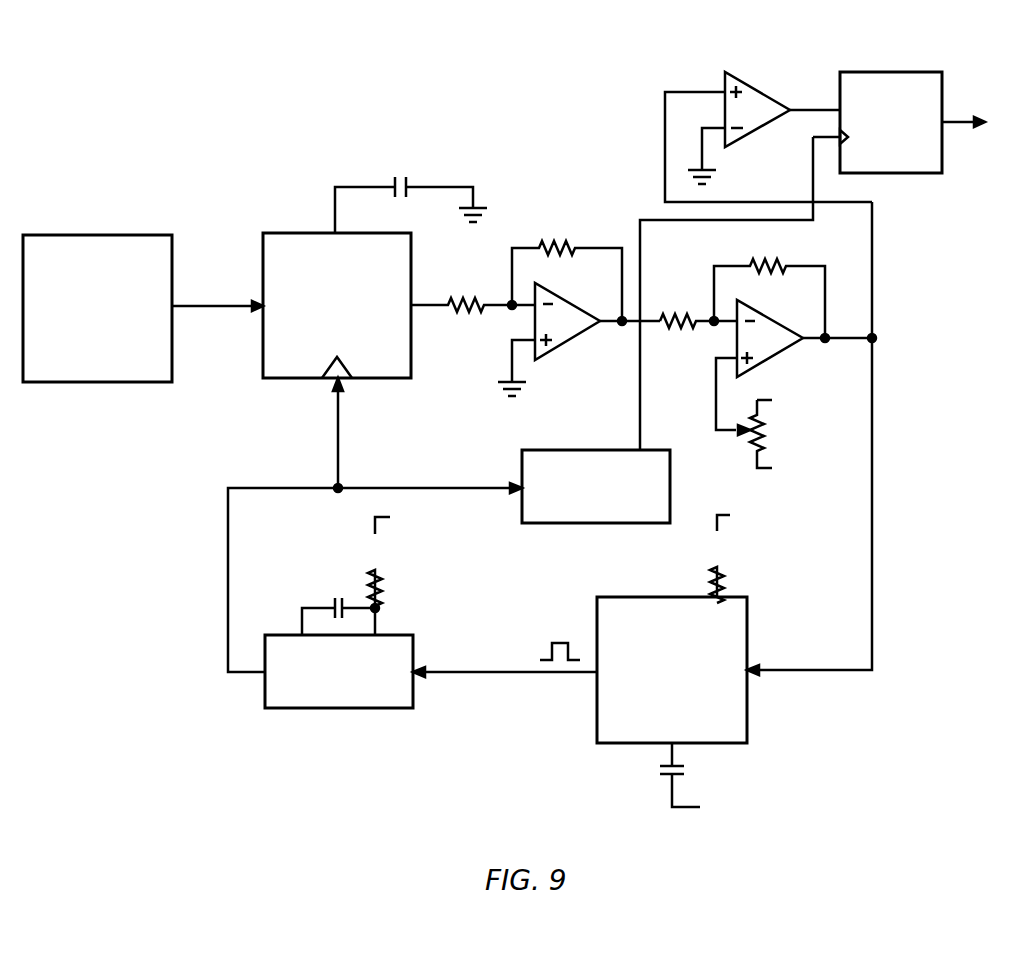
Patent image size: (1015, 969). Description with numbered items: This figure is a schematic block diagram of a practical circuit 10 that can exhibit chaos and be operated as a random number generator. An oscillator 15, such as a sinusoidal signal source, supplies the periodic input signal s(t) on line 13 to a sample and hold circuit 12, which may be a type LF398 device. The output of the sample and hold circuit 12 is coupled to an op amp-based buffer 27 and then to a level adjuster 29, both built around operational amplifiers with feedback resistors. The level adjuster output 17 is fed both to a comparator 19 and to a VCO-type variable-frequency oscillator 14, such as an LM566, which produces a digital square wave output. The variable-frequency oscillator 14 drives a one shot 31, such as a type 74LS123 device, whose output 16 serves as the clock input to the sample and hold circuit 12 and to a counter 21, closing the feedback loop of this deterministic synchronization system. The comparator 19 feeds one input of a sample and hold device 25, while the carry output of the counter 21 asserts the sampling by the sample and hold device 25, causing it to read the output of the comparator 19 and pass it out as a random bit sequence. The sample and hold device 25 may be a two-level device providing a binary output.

The random number generator 10 is at (510, 108).
The sample and hold circuit 12 is at (299, 230).
The input signal line 13 is at (223, 309).
The variable-frequency oscillator 14 is at (614, 592).
The oscillator 15 is at (131, 230).
The one shot output 16 is at (228, 530).
The level adjuster output 17 is at (840, 335).
The comparator 19 is at (755, 86).
The counter 21 is at (597, 450).
The sample and hold device 25 is at (887, 70).
The op amp-based buffer 27 is at (576, 337).
The level adjuster 29 is at (778, 352).
The one shot 31 is at (315, 710).